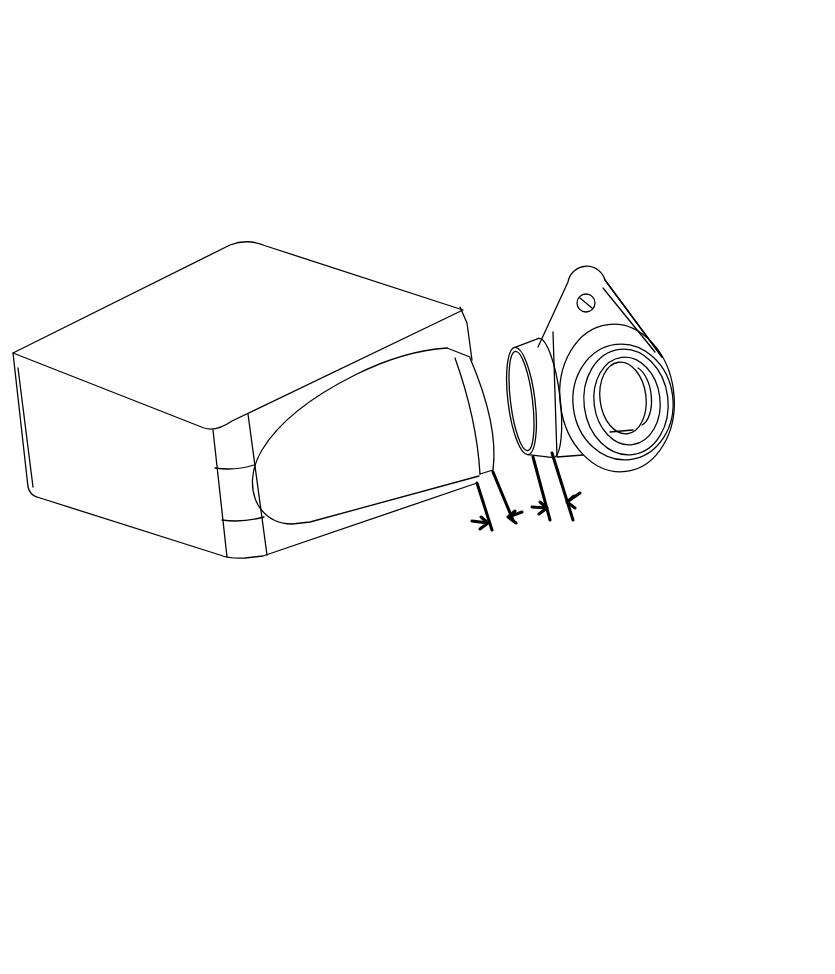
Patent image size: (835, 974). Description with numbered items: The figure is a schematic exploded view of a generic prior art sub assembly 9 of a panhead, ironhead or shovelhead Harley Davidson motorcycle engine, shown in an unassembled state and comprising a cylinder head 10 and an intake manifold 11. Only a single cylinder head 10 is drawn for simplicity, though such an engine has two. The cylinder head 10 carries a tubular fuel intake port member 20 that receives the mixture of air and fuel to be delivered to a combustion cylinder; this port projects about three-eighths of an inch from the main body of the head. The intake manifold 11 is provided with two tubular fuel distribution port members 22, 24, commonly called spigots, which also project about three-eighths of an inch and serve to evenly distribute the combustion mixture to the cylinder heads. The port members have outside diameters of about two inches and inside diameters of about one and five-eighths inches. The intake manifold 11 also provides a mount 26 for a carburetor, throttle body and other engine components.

The sub assembly 9 is at (713, 600).
The cylinder head 10 is at (192, 307).
The intake manifold 11 is at (666, 265).
The fuel intake port member 20 is at (463, 362).
The fuel distribution port member 22 is at (525, 358).
The fuel distribution port member 24 is at (665, 410).
The mount 26 is at (628, 312).